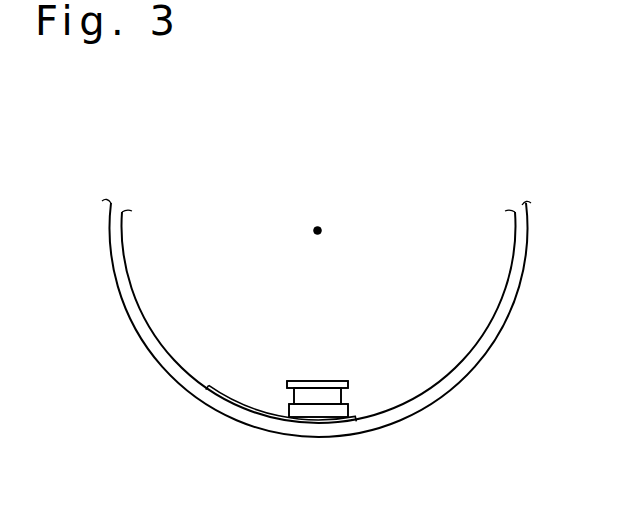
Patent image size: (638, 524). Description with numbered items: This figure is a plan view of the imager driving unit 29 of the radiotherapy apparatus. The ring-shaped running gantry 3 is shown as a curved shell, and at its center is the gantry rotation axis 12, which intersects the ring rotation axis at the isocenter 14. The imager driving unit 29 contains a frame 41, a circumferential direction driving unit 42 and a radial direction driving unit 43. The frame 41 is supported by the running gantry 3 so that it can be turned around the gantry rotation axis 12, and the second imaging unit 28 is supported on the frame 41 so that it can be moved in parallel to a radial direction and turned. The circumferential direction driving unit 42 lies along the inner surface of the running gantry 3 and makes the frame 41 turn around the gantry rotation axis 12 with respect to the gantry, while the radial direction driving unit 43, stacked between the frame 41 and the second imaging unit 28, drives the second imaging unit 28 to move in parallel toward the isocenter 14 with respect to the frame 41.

The running gantry 3 is at (420, 411).
The gantry rotation axis 12 is at (318, 229).
The isocenter 14 is at (318, 231).
The second imaging unit 28 is at (329, 381).
The imager driving unit 29 is at (288, 356).
The frame 41 is at (288, 410).
The circumferential direction driving unit 42 is at (213, 386).
The radial direction driving unit 43 is at (341, 397).